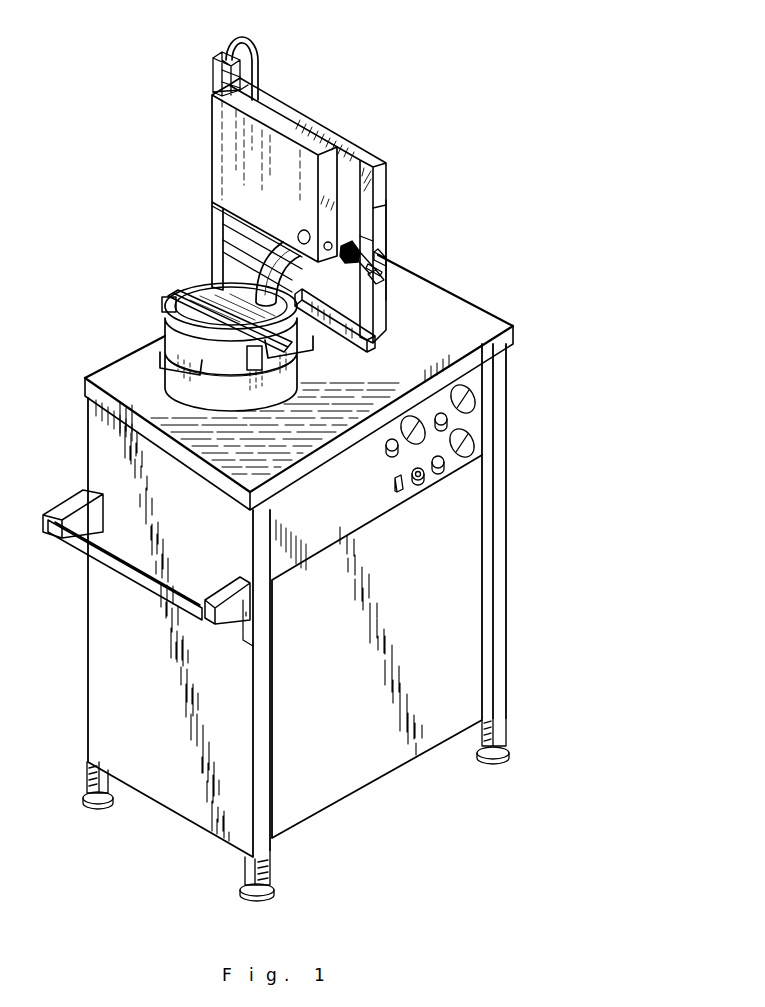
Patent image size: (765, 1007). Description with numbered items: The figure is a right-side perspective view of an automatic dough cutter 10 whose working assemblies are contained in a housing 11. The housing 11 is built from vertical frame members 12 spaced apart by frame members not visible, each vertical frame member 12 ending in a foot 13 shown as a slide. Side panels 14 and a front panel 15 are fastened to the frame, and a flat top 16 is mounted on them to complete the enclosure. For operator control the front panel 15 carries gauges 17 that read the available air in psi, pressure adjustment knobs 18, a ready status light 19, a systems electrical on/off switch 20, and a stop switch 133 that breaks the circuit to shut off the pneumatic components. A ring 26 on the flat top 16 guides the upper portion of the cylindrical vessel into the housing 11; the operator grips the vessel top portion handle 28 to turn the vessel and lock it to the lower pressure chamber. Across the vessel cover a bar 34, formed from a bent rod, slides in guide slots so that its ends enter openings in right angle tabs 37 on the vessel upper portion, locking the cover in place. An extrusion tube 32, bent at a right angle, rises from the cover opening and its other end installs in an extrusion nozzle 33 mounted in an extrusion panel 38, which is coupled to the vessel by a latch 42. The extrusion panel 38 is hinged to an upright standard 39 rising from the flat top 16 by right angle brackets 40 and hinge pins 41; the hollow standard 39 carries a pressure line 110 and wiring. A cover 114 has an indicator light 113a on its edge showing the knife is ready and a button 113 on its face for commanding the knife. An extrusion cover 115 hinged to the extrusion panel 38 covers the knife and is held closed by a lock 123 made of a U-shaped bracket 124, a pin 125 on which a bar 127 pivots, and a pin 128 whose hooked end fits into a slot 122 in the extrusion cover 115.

The dough cutter 10 is at (542, 386).
The housing 11 is at (502, 306).
The vertical frame members 12 is at (506, 731).
The foot 13 is at (509, 757).
The side panels 14 is at (168, 540).
The front panel 15 is at (403, 600).
The flat top 16 is at (313, 385).
The gauges 17 is at (475, 396).
The pressure adjustment knobs 18 is at (448, 422).
The ready status light 19 is at (425, 476).
The systems electrical on/off switch 20 is at (394, 489).
The ring 26 is at (163, 378).
The cylindrical vessel top portion handle 28 is at (160, 353).
The extrusion tube 32 is at (222, 247).
The extrusion nozzle 33 is at (212, 216).
The bar 34 is at (163, 300).
The right angle tabs 37 is at (200, 293).
The extrusion panel 38 is at (374, 158).
The standard 39 is at (214, 60).
The right angle brackets 40 is at (214, 72).
The hinge pin 41 is at (214, 90).
The latch 42 is at (369, 324).
The pressure line 110 is at (244, 46).
The button 113 is at (302, 230).
The indicator light 113a is at (331, 243).
The cover 114 is at (254, 165).
The extrusion cover 115 is at (392, 190).
The slot 122 is at (392, 241).
The lock 123 is at (348, 273).
The U-shaped bracket 124 is at (386, 212).
The pin 125 is at (387, 260).
The bar 127 is at (380, 284).
The pin 128 is at (380, 270).
The stop switch 133 is at (446, 463).